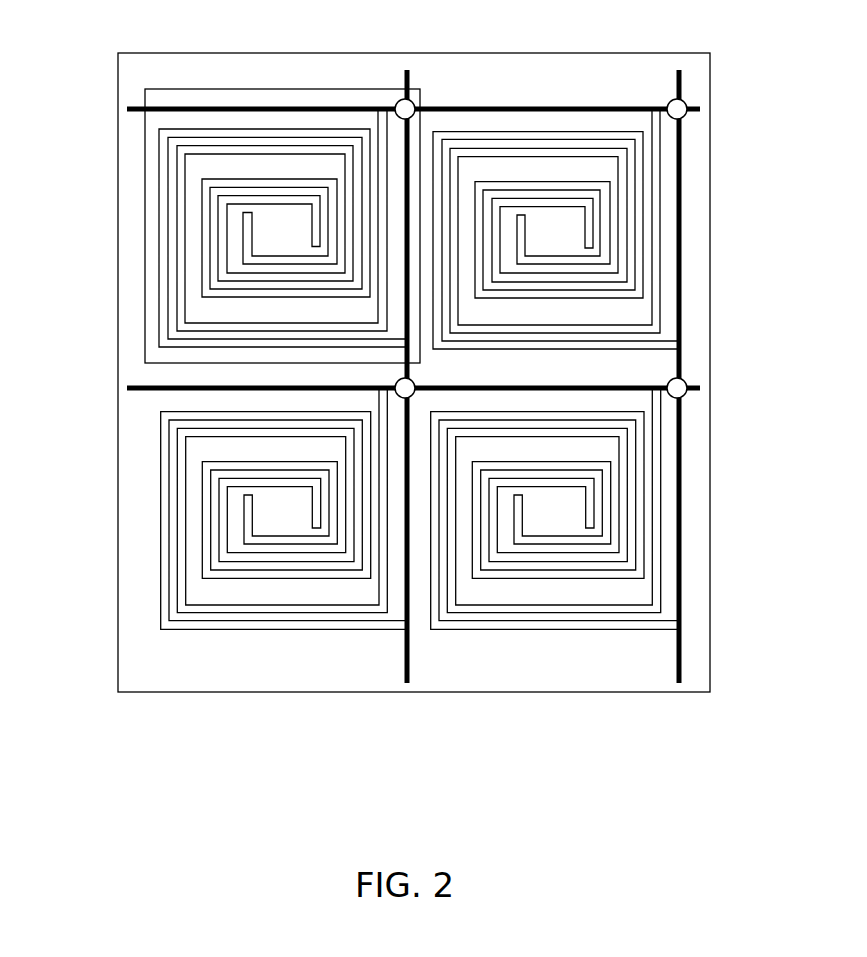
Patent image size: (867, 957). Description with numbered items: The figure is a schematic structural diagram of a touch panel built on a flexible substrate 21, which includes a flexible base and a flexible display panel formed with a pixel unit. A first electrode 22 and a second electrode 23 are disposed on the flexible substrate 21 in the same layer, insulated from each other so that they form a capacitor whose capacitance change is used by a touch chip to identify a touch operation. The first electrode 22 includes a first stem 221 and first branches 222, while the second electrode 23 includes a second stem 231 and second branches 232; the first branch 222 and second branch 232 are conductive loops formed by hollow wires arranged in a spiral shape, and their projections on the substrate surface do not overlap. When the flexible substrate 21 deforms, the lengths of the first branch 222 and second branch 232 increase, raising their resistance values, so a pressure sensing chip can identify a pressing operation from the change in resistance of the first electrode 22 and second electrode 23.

The flexible substrate 21 is at (135, 64).
The first electrode 22 is at (365, 423).
The first stem 221 is at (127, 388).
The first branch 222 is at (387, 120).
The second electrode 23 is at (590, 450).
The second stem 231 is at (681, 220).
The second branch 232 is at (657, 340).